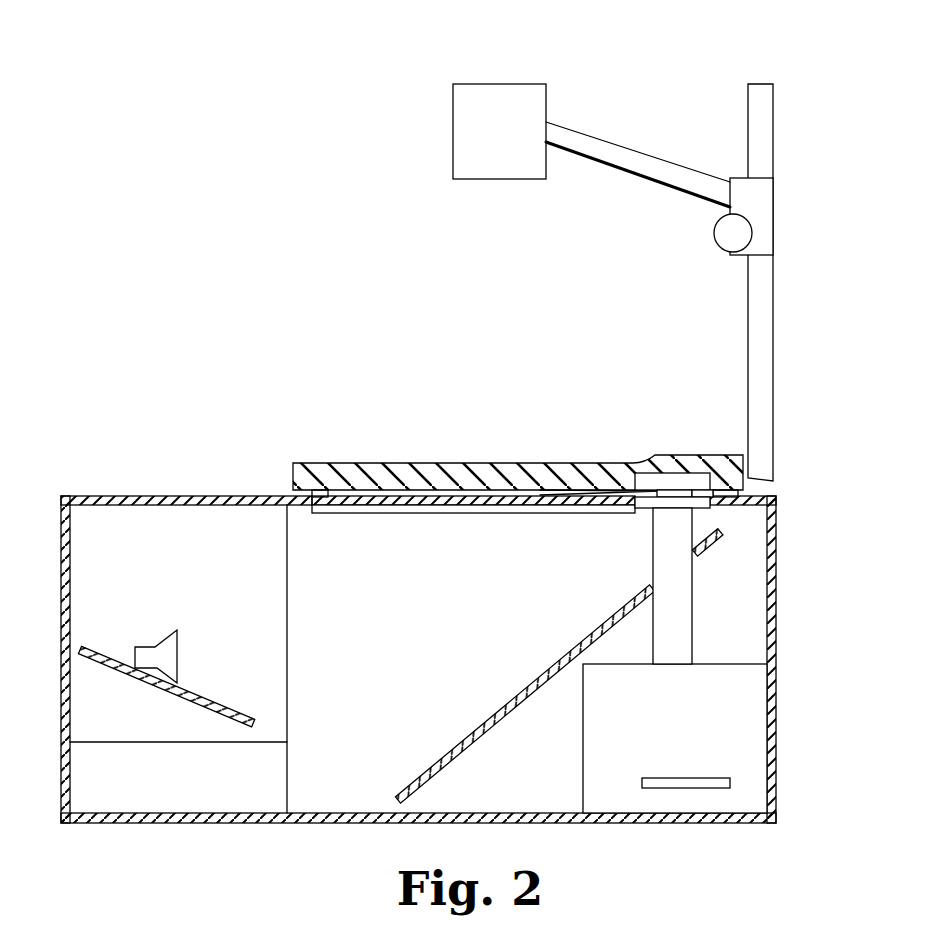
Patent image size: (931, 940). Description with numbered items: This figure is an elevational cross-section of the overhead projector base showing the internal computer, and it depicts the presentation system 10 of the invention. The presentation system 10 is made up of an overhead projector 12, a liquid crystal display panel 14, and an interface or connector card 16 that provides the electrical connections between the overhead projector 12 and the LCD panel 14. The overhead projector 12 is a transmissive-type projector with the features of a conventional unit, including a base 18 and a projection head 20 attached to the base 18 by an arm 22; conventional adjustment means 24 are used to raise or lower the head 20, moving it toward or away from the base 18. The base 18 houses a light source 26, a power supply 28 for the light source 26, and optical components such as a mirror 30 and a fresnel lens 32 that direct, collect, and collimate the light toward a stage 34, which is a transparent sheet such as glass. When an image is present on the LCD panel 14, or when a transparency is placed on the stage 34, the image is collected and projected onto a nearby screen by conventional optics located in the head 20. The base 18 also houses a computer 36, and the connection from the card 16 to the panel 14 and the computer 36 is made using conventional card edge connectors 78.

The presentation system 10 is at (644, 396).
The overhead projector 12 is at (784, 596).
The liquid crystal display panel 14 is at (310, 458).
The interface card 16 is at (545, 490).
The base 18 is at (62, 553).
The projection head 20 is at (513, 108).
The arm 22 is at (757, 311).
The adjustment means 24 is at (758, 190).
The light source 26 is at (167, 650).
The power supply 28 is at (125, 783).
The mirror 30 is at (549, 665).
The fresnel lens 32 is at (455, 513).
The stage 34 is at (416, 500).
The computer 36 is at (745, 713).
The card edge connectors 78 is at (670, 500).